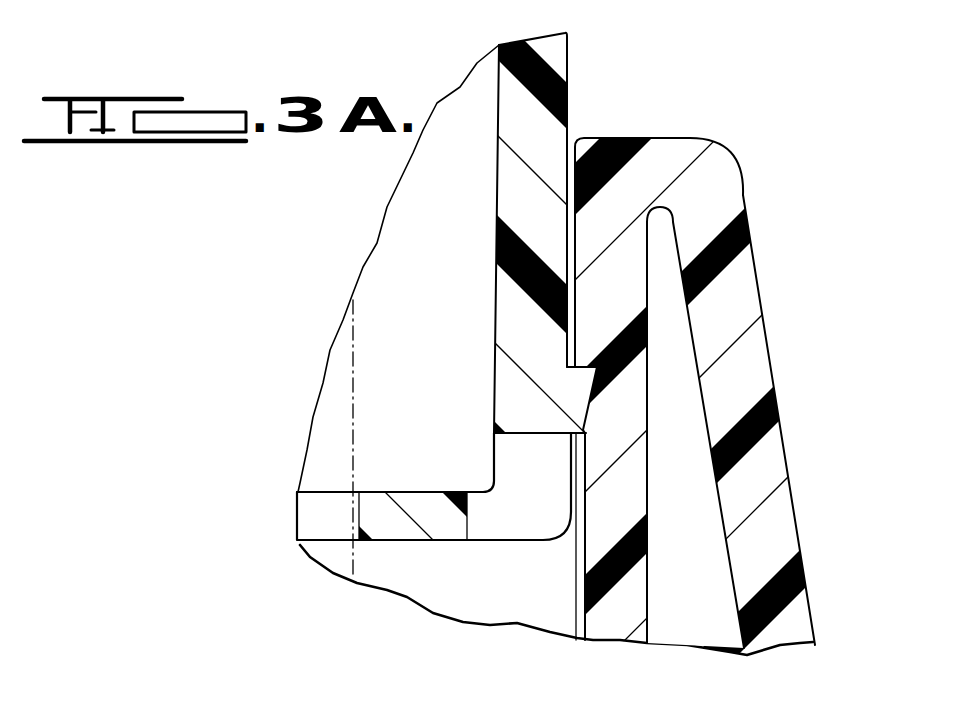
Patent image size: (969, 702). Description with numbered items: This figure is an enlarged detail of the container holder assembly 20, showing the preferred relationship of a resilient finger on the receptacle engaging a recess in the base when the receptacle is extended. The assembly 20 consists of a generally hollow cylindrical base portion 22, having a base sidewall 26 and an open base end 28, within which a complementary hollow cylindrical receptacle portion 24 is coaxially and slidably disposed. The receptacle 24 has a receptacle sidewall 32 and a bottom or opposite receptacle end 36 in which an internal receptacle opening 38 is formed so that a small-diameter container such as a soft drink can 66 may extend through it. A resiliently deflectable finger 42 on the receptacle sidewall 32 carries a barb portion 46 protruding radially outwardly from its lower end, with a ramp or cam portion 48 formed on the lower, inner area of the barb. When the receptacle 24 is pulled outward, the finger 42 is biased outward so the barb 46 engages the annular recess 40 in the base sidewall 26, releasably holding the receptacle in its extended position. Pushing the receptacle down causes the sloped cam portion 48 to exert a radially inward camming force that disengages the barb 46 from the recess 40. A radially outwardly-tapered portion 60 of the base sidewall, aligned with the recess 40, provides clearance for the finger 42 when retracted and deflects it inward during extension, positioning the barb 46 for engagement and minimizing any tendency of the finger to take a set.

The accessory or container holder assembly 20 is at (484, 351).
The base portion 22 is at (668, 277).
The receptacle portion 24 is at (570, 61).
The base sidewall 26 is at (582, 613).
The open base end 28 is at (590, 138).
The receptacle sidewall 32 is at (495, 285).
The bottom or opposite receptacle end 36 is at (410, 492).
The internal receptacle opening 38 is at (357, 517).
The recess 40 is at (596, 405).
The resiliently deflectable finger or protuberance 42 is at (512, 195).
The barb portion 46 is at (588, 376).
The ramp or cam portion 48 is at (587, 410).
The radially outwardly-tapered portion 60 is at (593, 633).
The soft drink can 66 is at (314, 453).